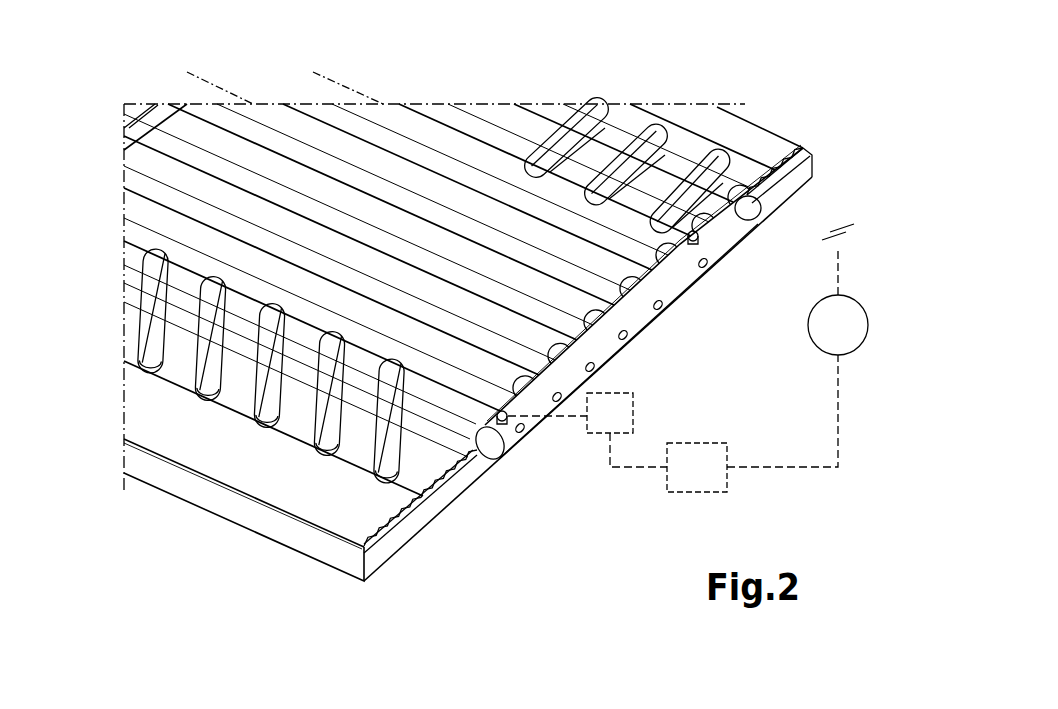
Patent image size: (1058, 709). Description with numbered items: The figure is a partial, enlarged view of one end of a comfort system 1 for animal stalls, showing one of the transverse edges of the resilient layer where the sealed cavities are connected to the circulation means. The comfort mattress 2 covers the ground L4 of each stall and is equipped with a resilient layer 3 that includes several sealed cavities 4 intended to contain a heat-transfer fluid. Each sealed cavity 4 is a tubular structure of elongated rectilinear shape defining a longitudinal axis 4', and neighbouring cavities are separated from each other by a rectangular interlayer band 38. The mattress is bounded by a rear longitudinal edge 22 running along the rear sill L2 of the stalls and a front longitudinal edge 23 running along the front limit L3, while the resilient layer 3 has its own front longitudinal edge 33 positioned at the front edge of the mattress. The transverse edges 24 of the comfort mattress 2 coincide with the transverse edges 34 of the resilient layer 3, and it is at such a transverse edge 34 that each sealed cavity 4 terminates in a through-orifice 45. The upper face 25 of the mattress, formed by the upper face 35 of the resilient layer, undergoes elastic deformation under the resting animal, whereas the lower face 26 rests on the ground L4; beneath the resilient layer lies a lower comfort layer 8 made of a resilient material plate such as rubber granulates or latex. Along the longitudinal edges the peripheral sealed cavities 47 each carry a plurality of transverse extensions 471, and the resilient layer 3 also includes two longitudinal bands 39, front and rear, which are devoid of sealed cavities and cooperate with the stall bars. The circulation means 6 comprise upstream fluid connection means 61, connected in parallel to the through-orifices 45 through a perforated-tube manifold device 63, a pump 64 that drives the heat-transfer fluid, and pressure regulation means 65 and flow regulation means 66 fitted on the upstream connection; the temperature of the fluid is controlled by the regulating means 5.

The comfort system 1 is at (870, 177).
The comfort mattress 2 is at (468, 342).
The resilient layer 3 is at (325, 316).
The sealed cavities 4 is at (395, 311).
The longitudinal axis 4' is at (274, 78).
The peripheral sealed cavities 47 is at (188, 182).
The transverse extensions 471 is at (430, 470).
The temperature regulating means 5 is at (690, 481).
The circulation means 6 is at (842, 495).
The lower comfort layer 8 is at (377, 517).
The rear longitudinal edge 22 is at (220, 506).
The rear sill of the stall L2 is at (165, 472).
The front limit L3 is at (776, 86).
The front longitudinal edge 23 is at (776, 86).
The front longitudinal edge of the resilient layer 33 is at (758, 108).
The transverse edges 24 is at (615, 353).
The transverse edges of the resilient layer 34 is at (615, 353).
The through-orifices 45 is at (566, 364).
The upper face 25 is at (118, 109).
The upper face of the resilient layer 35 is at (155, 161).
The lower face 26 is at (588, 379).
The ground L4 is at (486, 482).
The interlayer band 38 is at (600, 296).
The longitudinal bands 39 is at (143, 403).
The upstream fluid connection means 61 is at (653, 345).
The perforated-tube device 63 is at (668, 264).
The pump 64 is at (826, 338).
The pressure regulation means 65 is at (598, 426).
The flow regulation means 66 is at (658, 306).